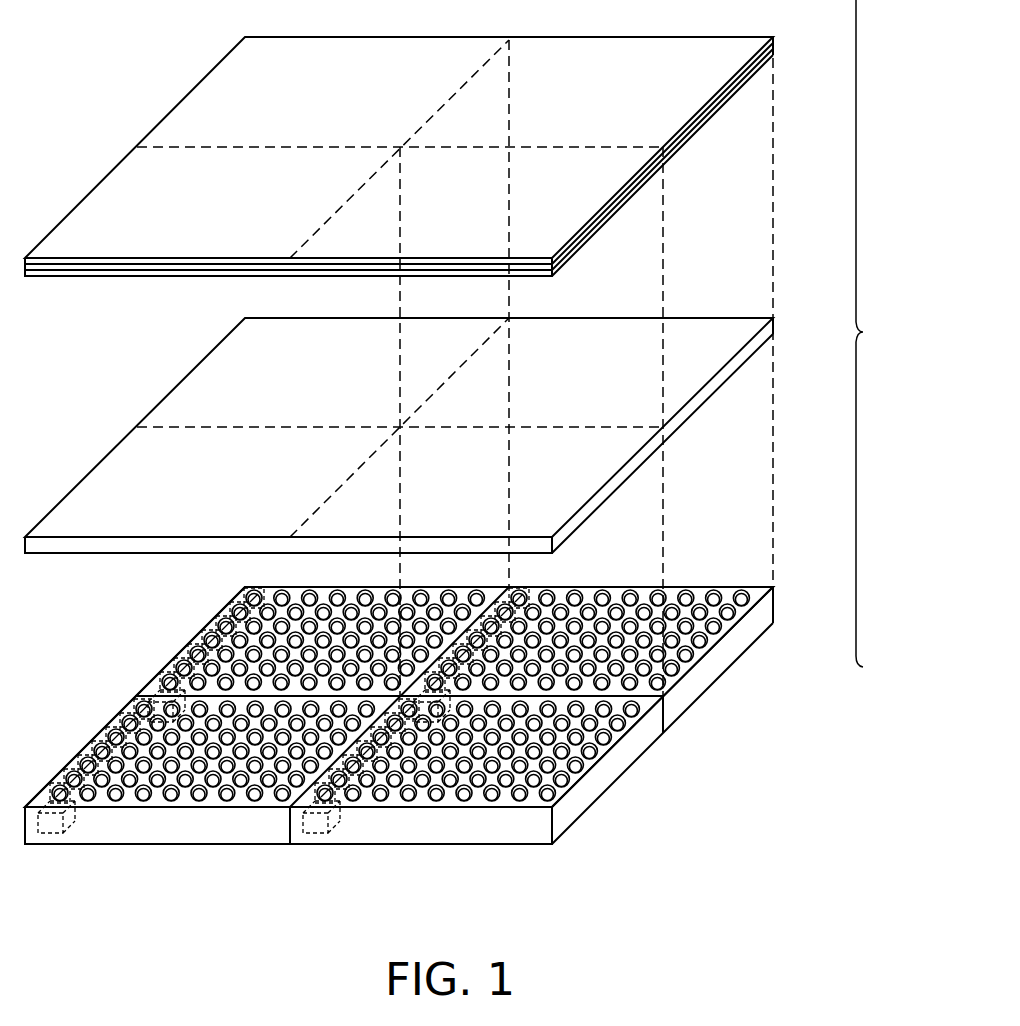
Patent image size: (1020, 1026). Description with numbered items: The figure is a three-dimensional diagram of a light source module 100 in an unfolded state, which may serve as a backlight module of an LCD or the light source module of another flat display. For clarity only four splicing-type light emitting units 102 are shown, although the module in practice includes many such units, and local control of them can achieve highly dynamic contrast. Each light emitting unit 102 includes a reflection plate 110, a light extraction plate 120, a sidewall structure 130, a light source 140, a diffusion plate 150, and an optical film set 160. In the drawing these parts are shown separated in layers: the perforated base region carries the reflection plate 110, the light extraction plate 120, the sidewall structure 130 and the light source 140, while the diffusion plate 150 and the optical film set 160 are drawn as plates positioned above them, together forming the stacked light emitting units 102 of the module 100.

The light source module 100 is at (832, 864).
The light emitting unit 102 is at (877, 333).
The reflection plate 110 is at (742, 653).
The light extraction plate 120 is at (740, 612).
The sidewall structure 130 is at (748, 628).
The light source 140 is at (553, 627).
The diffusion plate 150 is at (710, 387).
The optical film set 160 is at (729, 115).